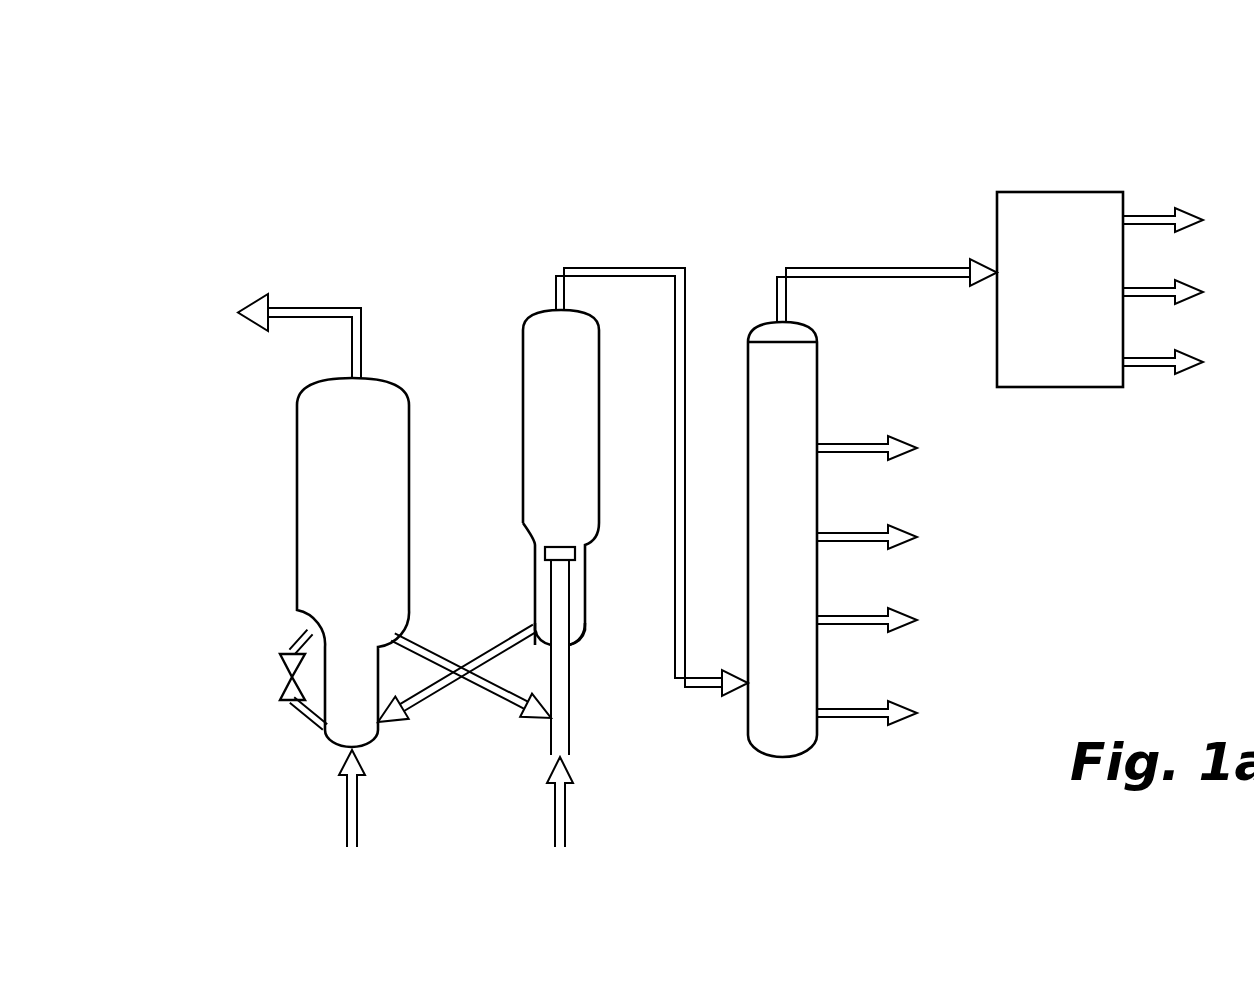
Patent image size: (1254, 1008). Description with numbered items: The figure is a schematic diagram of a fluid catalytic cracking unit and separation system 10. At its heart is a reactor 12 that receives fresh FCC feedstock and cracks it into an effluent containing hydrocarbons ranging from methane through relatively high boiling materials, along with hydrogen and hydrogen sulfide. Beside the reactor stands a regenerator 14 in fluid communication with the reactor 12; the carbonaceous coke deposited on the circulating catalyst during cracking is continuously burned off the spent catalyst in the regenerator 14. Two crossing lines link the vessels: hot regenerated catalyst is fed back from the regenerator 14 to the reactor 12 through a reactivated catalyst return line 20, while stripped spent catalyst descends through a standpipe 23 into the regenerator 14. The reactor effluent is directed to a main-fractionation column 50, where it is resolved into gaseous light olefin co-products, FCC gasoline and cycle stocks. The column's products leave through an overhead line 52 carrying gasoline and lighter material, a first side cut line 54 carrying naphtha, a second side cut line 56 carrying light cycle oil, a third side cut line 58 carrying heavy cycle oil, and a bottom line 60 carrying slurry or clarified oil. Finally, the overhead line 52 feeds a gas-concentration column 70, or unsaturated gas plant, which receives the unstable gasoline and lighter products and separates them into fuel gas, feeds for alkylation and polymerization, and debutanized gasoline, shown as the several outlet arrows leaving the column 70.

The fluid catalytic cracking unit and separation system 10 is at (264, 156).
The reactor 12 is at (569, 409).
The regenerator 14 is at (366, 502).
The reactivated catalyst return line 20 is at (428, 648).
The standpipe 23 is at (432, 697).
The main-fractionation column 50 is at (794, 507).
The overhead line 52 is at (777, 292).
The first side cut line 54 is at (885, 449).
The second side cut line 56 is at (885, 538).
The third side cut line 58 is at (885, 621).
The bottom line 60 is at (885, 714).
The gas-concentration column 70 is at (1072, 297).